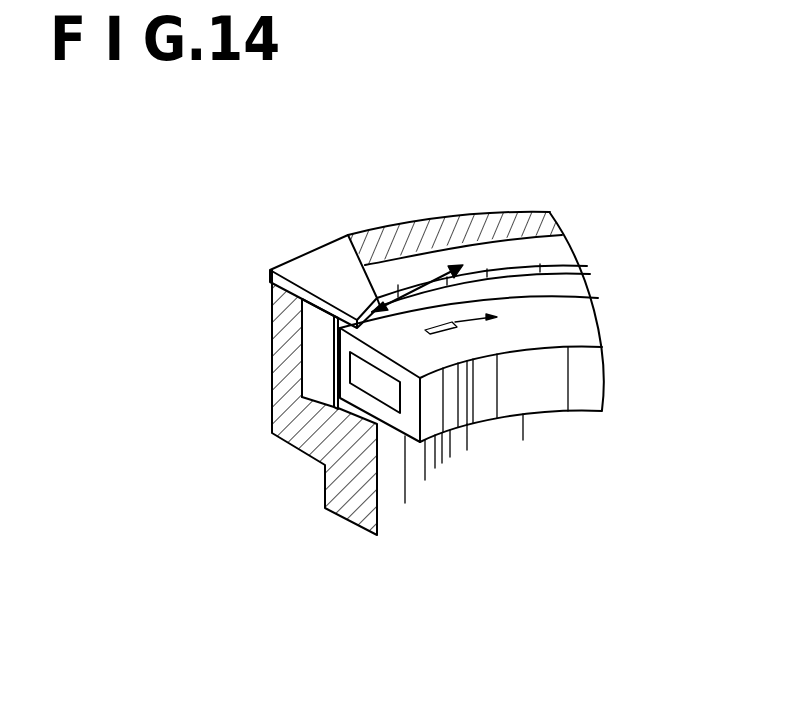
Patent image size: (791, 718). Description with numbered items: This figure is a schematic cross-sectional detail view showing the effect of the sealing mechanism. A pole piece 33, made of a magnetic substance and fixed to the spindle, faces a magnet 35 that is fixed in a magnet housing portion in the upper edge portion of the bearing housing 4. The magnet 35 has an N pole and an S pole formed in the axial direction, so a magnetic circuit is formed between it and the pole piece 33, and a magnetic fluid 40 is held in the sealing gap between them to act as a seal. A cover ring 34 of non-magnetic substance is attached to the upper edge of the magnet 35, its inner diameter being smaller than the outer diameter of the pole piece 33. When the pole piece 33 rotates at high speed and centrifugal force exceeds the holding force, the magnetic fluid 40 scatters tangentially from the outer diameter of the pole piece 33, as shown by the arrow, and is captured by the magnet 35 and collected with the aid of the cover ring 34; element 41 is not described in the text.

The bearing housing 4 is at (333, 488).
The yoke 41 is at (300, 393).
The magnet 35 is at (312, 348).
The cover ring 34 is at (323, 272).
The pole piece 33 is at (573, 325).
The magnetic fluid 40 is at (406, 300).